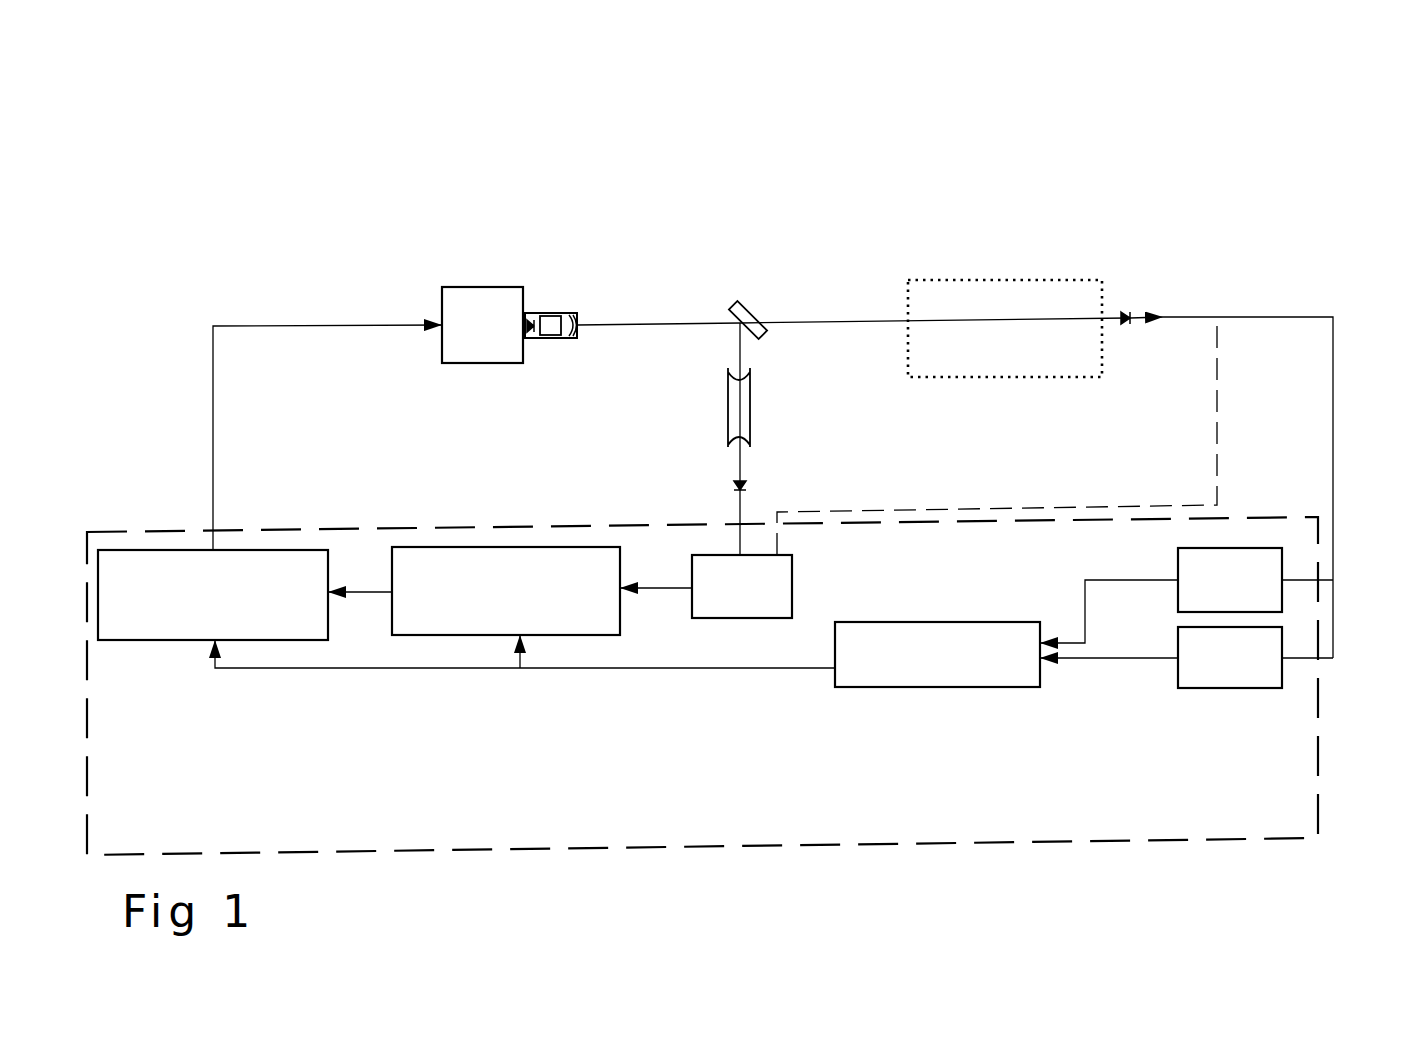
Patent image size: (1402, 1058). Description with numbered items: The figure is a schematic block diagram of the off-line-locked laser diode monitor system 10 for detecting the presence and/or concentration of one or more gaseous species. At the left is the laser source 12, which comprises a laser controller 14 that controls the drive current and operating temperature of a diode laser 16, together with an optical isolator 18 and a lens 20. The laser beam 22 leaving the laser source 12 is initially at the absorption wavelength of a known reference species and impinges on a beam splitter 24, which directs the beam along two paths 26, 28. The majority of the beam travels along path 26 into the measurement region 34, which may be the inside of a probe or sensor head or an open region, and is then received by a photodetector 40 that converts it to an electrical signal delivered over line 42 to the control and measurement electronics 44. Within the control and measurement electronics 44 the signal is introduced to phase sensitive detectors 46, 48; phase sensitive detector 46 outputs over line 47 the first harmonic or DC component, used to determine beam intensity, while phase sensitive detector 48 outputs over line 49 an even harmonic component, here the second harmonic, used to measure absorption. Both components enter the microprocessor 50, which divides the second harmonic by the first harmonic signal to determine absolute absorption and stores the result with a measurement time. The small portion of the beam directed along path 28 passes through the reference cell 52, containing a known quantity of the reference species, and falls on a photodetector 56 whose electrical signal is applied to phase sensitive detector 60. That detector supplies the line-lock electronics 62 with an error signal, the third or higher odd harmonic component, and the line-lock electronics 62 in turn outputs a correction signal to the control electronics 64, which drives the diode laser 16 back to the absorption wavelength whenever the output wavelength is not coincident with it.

The off-line-locked laser diode monitor system 10 is at (162, 84).
The laser source 12 is at (492, 367).
The laser controller 14 is at (483, 284).
The diode laser 16 is at (537, 302).
The optical isolator 18 is at (555, 302).
The lens 20 is at (575, 302).
The laser beam 22 is at (625, 326).
The beam splitter 24 is at (757, 308).
The path 26 is at (811, 320).
The path 28 is at (738, 355).
The measurement region 34 is at (1043, 280).
The photodetector 40 is at (1197, 247).
The line 42 is at (1310, 321).
The control and measurement electronics 44 is at (573, 850).
The phase sensitive detector 46 is at (1258, 548).
The line 47 is at (1125, 580).
The phase sensitive detector 48 is at (1265, 690).
The line 49 is at (1137, 658).
The microprocessor 50 is at (965, 687).
The reference cell 52 is at (746, 410).
The photodetector 56 is at (830, 462).
The phase sensitive detector 60 is at (792, 574).
The line-lock electronics 62 is at (450, 636).
The control electronics 64 is at (305, 640).